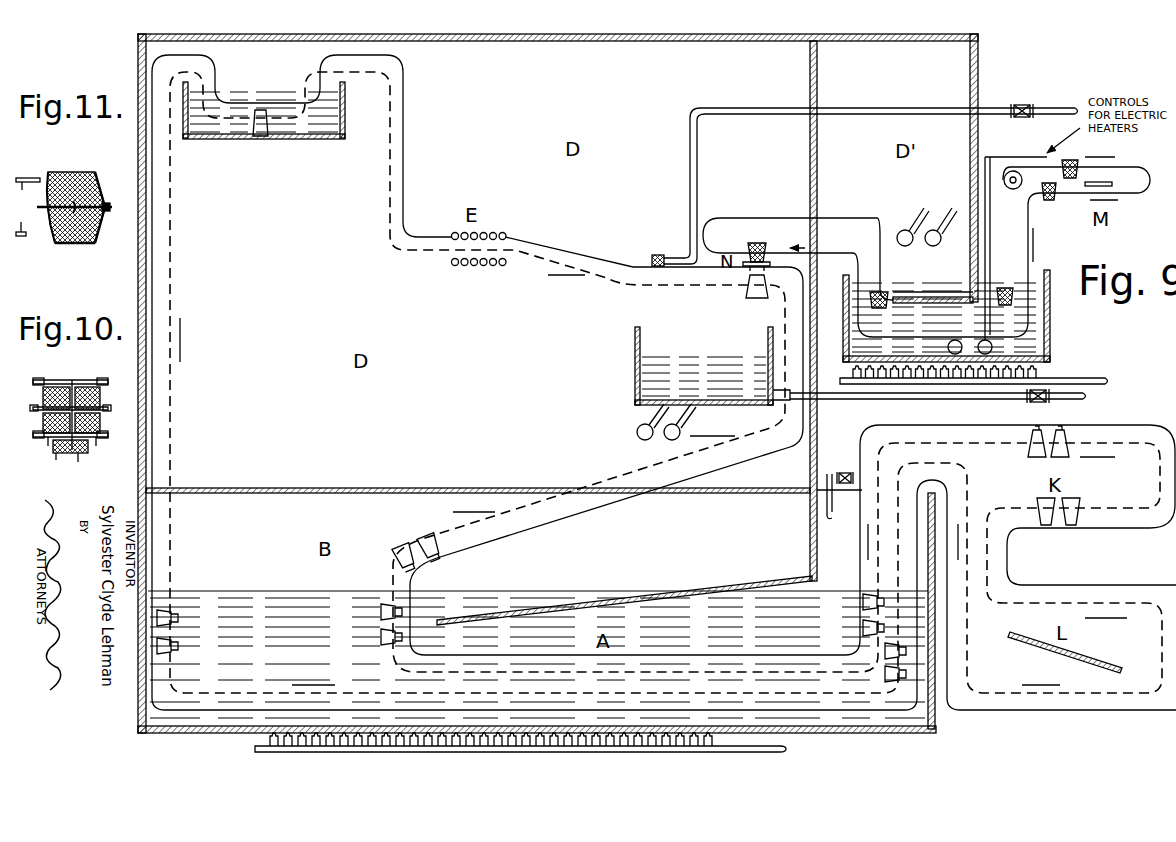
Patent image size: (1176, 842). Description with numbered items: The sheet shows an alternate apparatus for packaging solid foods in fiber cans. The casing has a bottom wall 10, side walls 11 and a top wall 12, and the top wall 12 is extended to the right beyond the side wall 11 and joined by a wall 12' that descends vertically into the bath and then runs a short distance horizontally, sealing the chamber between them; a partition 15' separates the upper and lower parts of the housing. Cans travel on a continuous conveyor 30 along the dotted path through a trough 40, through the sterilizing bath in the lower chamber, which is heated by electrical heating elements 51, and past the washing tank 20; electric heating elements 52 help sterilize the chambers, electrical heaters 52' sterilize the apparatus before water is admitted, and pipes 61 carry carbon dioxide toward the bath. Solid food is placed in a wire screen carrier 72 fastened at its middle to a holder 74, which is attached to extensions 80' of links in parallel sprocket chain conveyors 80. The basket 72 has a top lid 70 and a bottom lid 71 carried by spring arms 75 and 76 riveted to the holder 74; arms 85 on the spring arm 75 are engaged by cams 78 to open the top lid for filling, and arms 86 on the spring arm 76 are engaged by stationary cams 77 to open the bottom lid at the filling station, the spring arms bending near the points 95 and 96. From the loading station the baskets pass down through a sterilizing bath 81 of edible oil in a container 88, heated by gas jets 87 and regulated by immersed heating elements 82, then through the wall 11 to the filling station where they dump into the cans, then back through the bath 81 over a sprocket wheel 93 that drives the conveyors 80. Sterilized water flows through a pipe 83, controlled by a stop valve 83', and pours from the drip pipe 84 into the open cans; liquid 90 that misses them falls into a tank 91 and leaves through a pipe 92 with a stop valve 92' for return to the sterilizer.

In FIG. 9, the bottom wall 10 is at (180, 734).
In FIG. 9, the side wall 11 is at (138, 278).
In FIG. 9, the top wall 12 is at (503, 381).
In FIG. 9, the wall 12' is at (730, 329).
In FIG. 9, the horizontal partition 15' is at (478, 471).
In FIG. 9, the container 20 is at (270, 140).
In FIG. 9, the continuous conveyor 30 is at (172, 440).
In FIG. 9, the conveyor trough 40 is at (153, 400).
In FIG. 9, the electrical heating elements 51 is at (798, 618).
In FIG. 9, the electric heating elements 52 is at (918, 221).
In FIG. 9, the electrical heaters 52' is at (643, 424).
In FIG. 9, the pipes 61 is at (846, 472).
In FIG. 11, the openable lid 70 is at (60, 172).
In FIG. 10, the openable lid 70 is at (68, 387).
In FIG. 11, the openable lid 71 is at (68, 245).
In FIG. 10, the openable lid 71 is at (68, 453).
In FIG. 9, the wire screen carrier 72 is at (1078, 163).
In FIG. 11, the wire screen carrier 72 is at (50, 228).
In FIG. 11, the holder 74 is at (40, 200).
In FIG. 10, the holder 74 is at (46, 446).
In FIG. 11, the spring arm 75 is at (100, 180).
In FIG. 11, the spring arm 76 is at (100, 236).
In FIG. 10, the spring arm 76 is at (78, 462).
In FIG. 9, the stationary cams 77 is at (772, 262).
In FIG. 11, the stationary cams 77 is at (37, 208).
In FIG. 10, the stationary cams 77 is at (36, 433).
In FIG. 9, the cams 78 is at (1112, 186).
In FIG. 11, the cams 78 is at (22, 178).
In FIG. 10, the cams 78 is at (38, 380).
In FIG. 9, the parallel sprocket chain conveyors 80 is at (927, 241).
In FIG. 10, the extensions 80' is at (74, 398).
In FIG. 9, the sterilizing bath 81 is at (940, 292).
In FIG. 9, the heating elements 82 is at (985, 340).
In FIG. 9, the pipe 83 is at (871, 162).
In FIG. 9, the stop valve 83' is at (1032, 89).
In FIG. 9, the pipe 84 is at (660, 255).
In FIG. 10, the arms 85 is at (40, 378).
In FIG. 10, the arms 86 is at (97, 446).
In FIG. 9, the gas jets 87 is at (1042, 375).
In FIG. 9, the container 88 is at (1050, 320).
In FIG. 9, the liquid 90 is at (692, 352).
In FIG. 9, the tank 91 is at (635, 378).
In FIG. 9, the pipe 92 is at (938, 407).
In FIG. 9, the stop valve 92' is at (1056, 404).
In FIG. 9, the sprocket wheel 93 is at (1003, 181).
In FIG. 11, the bending point 95 is at (108, 203).
In FIG. 11, the bending point 96 is at (105, 212).